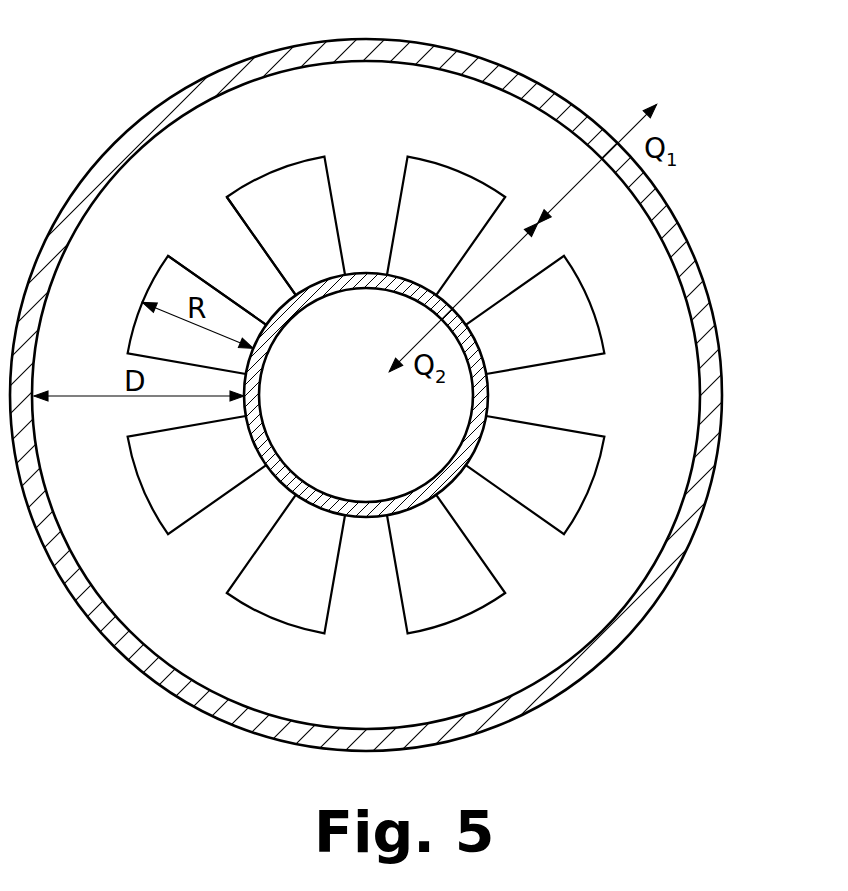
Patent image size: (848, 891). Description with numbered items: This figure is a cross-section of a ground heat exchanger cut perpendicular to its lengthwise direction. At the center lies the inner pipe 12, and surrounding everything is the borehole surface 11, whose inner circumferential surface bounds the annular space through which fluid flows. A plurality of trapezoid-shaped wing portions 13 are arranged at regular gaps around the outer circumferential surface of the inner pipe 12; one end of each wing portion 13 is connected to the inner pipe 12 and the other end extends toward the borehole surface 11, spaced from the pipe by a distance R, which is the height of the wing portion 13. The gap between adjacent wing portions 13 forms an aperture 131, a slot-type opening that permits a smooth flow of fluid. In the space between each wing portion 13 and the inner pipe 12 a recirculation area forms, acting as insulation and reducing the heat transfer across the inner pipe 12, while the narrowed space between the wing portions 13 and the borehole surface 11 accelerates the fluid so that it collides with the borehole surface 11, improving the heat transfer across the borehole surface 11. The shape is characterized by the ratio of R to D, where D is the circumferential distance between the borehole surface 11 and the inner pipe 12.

The borehole surface 11 is at (645, 598).
The inner pipe 12 is at (283, 477).
The wing portion 13 is at (558, 315).
The aperture 131 is at (235, 258).